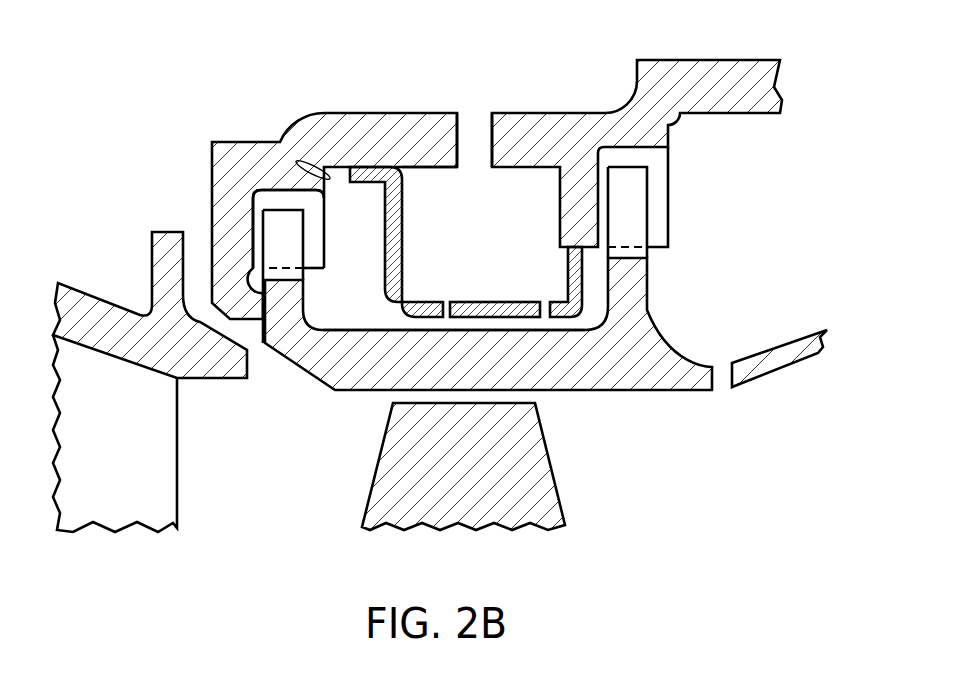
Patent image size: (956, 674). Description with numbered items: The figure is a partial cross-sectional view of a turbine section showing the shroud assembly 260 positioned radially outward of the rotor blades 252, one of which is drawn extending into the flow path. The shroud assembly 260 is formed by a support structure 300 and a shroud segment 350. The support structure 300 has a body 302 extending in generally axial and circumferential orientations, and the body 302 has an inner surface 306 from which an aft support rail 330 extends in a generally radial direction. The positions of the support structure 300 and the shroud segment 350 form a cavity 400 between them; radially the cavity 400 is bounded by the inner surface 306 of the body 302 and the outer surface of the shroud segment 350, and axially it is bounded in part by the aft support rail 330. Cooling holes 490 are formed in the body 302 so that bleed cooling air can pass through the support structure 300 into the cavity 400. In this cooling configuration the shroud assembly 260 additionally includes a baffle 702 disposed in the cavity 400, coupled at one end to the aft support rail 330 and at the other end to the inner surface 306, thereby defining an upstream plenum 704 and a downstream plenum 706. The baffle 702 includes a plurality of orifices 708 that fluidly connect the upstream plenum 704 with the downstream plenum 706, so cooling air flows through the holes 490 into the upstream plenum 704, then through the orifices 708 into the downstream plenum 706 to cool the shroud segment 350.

The rotor blades 252 is at (549, 466).
The shroud assembly 260 is at (722, 392).
The support structure 300 is at (568, 92).
The body 302 is at (356, 121).
The inner surface 306 is at (430, 167).
The aft support rail 330 is at (574, 252).
The shroud segment 350 is at (307, 383).
The cavity 400 is at (343, 222).
The cooling holes 490 is at (473, 121).
The baffle 702 is at (402, 267).
The upstream plenum 704 is at (455, 267).
The downstream plenum 706 is at (322, 310).
The orifices 708 is at (446, 318).